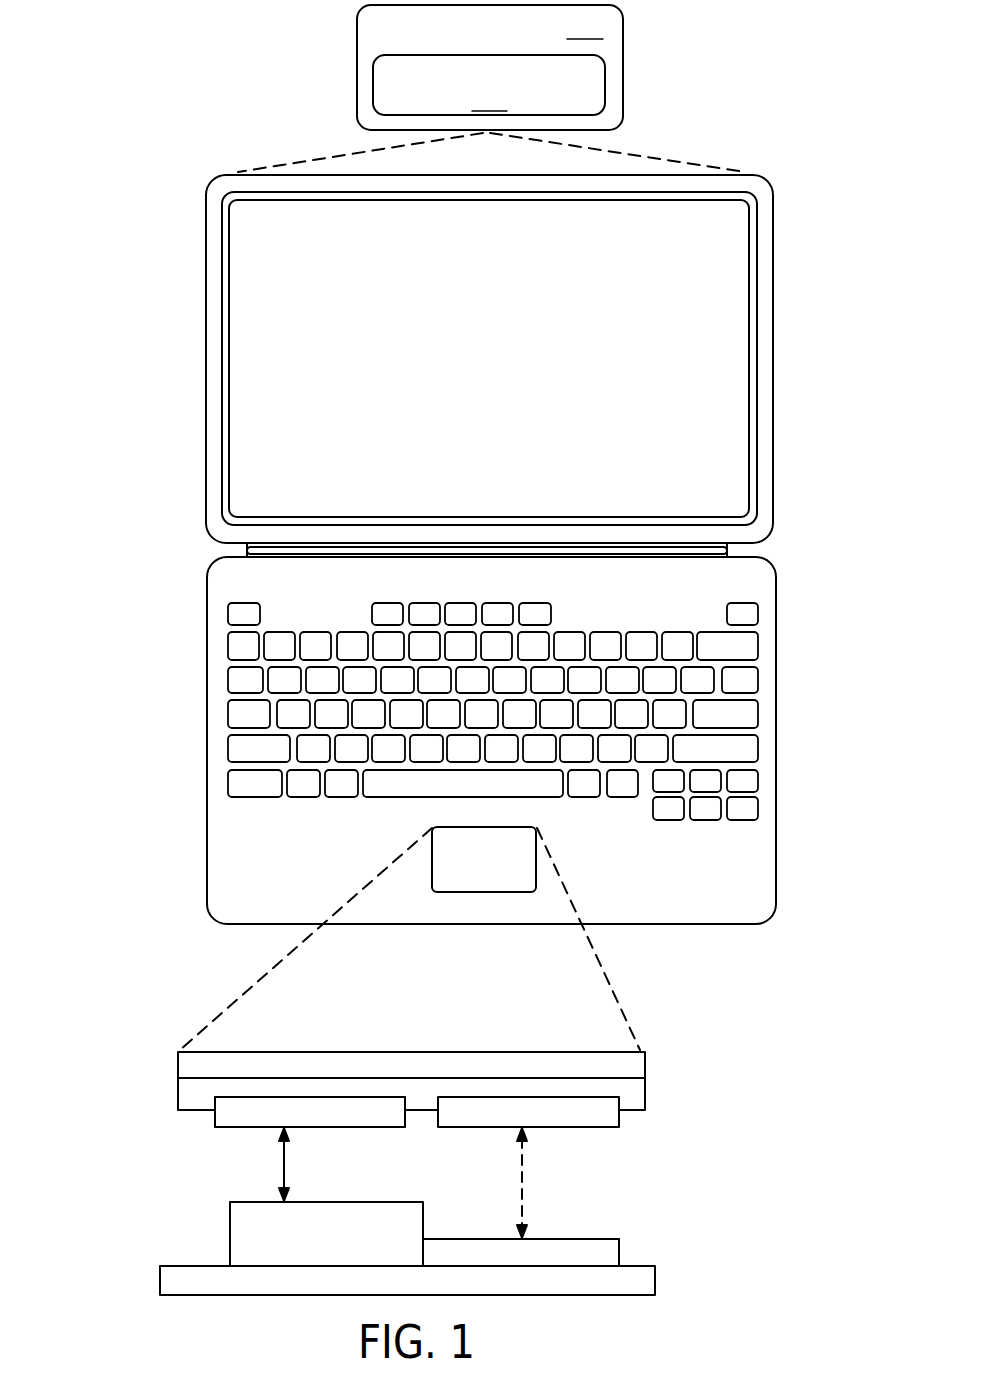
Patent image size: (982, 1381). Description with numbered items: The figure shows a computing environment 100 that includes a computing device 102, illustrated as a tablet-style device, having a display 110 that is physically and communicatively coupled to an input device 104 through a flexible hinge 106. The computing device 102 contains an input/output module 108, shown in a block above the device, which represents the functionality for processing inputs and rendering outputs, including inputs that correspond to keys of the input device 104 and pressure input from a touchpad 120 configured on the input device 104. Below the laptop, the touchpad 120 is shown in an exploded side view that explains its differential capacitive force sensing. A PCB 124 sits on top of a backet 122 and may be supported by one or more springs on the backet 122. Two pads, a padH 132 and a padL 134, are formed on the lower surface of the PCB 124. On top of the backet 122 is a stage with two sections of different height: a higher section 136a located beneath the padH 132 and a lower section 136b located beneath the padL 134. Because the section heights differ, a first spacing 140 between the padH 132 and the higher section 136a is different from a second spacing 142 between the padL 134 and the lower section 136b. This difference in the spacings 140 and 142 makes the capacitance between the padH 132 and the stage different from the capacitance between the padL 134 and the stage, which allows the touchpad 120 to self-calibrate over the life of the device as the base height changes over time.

The computing environment 100 is at (172, 88).
The computing device 102 is at (490, 67).
The input device 104 is at (208, 820).
The flexible hinge 106 is at (247, 548).
The input/output module 108 is at (489, 85).
The display 110 is at (258, 318).
The touchpad 120 is at (548, 870).
The backet 122 is at (655, 1282).
The PCB 124 is at (645, 1062).
The padH 132 is at (348, 1127).
The padL 134 is at (619, 1127).
The higher section 136a is at (230, 1230).
The lower section 136b is at (620, 1247).
The first spacing 140 is at (284, 1173).
The second spacing 142 is at (522, 1172).